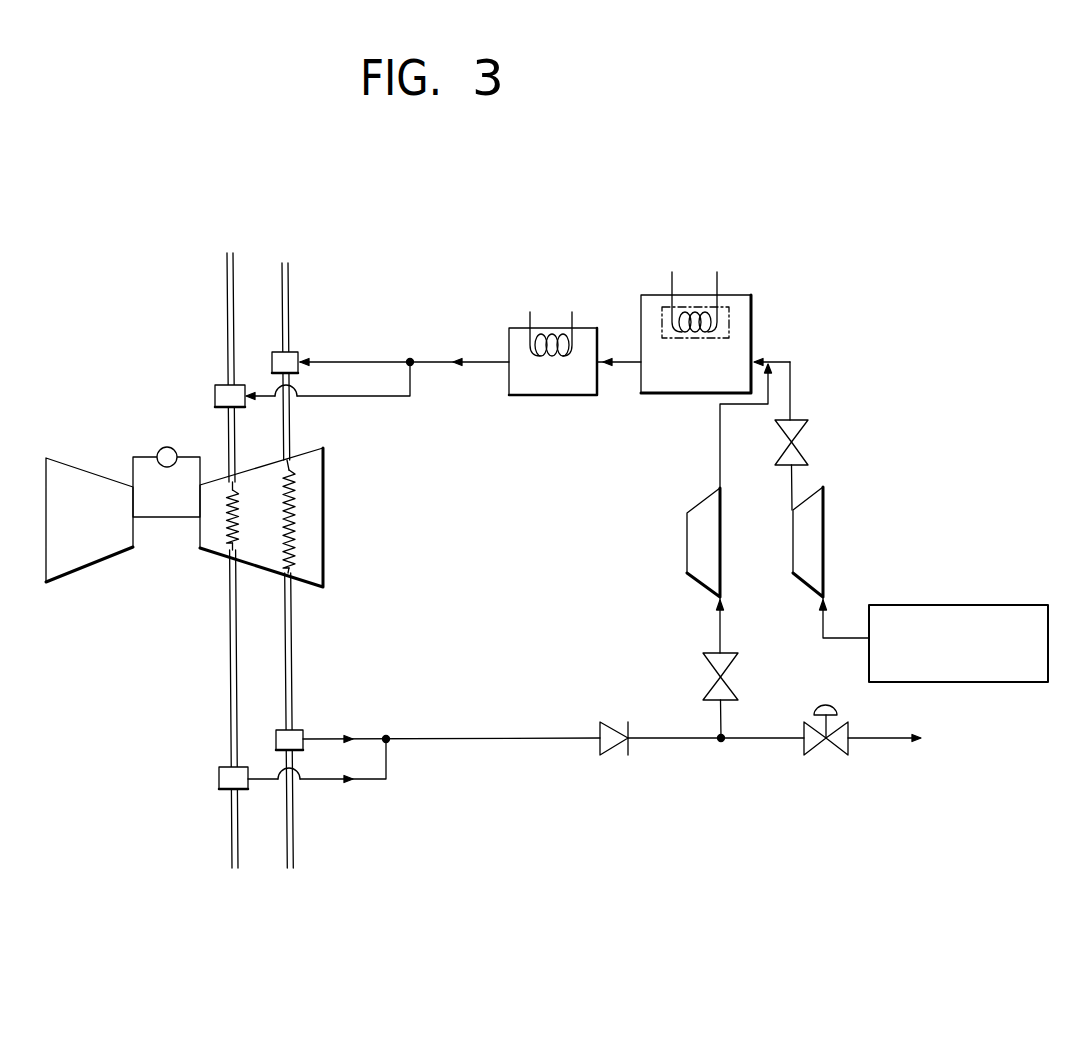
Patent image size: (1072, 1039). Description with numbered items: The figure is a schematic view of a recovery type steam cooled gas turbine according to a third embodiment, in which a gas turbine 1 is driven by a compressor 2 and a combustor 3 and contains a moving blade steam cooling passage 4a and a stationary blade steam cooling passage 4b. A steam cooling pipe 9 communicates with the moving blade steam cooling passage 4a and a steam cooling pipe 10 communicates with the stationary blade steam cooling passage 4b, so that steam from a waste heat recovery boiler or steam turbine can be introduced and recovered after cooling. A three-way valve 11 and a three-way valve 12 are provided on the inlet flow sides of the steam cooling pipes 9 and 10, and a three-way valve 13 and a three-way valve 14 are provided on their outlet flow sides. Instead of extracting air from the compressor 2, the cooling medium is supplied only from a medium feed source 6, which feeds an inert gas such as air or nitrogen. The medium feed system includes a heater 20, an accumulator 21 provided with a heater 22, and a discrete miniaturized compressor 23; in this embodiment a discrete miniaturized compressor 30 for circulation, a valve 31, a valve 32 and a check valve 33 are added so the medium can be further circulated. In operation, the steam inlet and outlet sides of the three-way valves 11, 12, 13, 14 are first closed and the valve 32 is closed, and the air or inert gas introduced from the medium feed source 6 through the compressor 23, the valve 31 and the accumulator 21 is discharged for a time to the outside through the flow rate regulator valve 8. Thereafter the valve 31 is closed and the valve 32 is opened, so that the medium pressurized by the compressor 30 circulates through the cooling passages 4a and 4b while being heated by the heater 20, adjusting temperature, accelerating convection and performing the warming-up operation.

The gas turbine 1 is at (202, 550).
The compressor 2 is at (78, 463).
The combustor 3 is at (164, 447).
The moving blade steam cooling passage 4a is at (228, 545).
The stationary blade steam cooling passage 4b is at (284, 552).
The medium feed source 6 is at (1010, 605).
The flow rate regulator valve 8 is at (848, 757).
The steam cooling pipe 9 is at (232, 253).
The steam cooling pipe 10 is at (287, 263).
The three-way valve 11 is at (215, 385).
The three-way valve 12 is at (298, 352).
The three-way valve 13 is at (219, 789).
The three-way valve 14 is at (303, 731).
The heater 20 is at (530, 312).
The accumulator 21 is at (751, 295).
The heater 22 is at (717, 272).
The discrete miniaturized compressor 23 is at (823, 490).
The discrete miniaturized compressor for circulation 30 is at (720, 490).
The valve 31 is at (808, 420).
The valve 32 is at (738, 653).
The check valve 33 is at (600, 757).